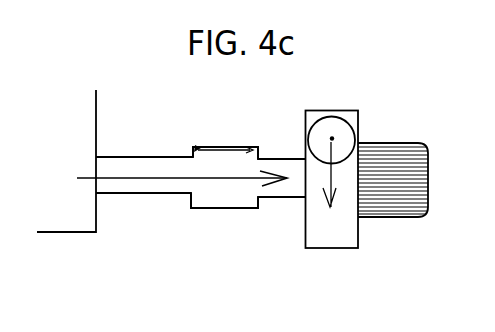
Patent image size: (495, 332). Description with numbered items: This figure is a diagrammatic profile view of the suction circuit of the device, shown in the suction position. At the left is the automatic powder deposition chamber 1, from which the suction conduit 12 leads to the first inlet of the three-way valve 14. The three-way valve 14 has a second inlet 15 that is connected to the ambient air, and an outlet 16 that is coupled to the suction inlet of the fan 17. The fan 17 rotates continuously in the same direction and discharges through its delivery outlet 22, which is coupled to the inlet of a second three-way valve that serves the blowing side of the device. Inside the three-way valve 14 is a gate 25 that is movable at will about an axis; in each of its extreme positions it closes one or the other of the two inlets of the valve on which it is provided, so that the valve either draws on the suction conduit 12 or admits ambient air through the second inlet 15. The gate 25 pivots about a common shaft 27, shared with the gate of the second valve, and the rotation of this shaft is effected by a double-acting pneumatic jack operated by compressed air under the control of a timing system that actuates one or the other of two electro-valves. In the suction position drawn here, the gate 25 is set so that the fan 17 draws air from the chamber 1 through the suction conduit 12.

The automatic powder deposition chamber 1 is at (68, 222).
The suction conduit 12 is at (138, 187).
The three-way valve 14 is at (223, 210).
The second inlet 15 is at (250, 147).
The outlet 16 is at (259, 188).
The fan 17 is at (352, 238).
The delivery outlet 22 is at (343, 133).
The gate 25 is at (218, 147).
The common shaft 27 is at (196, 149).